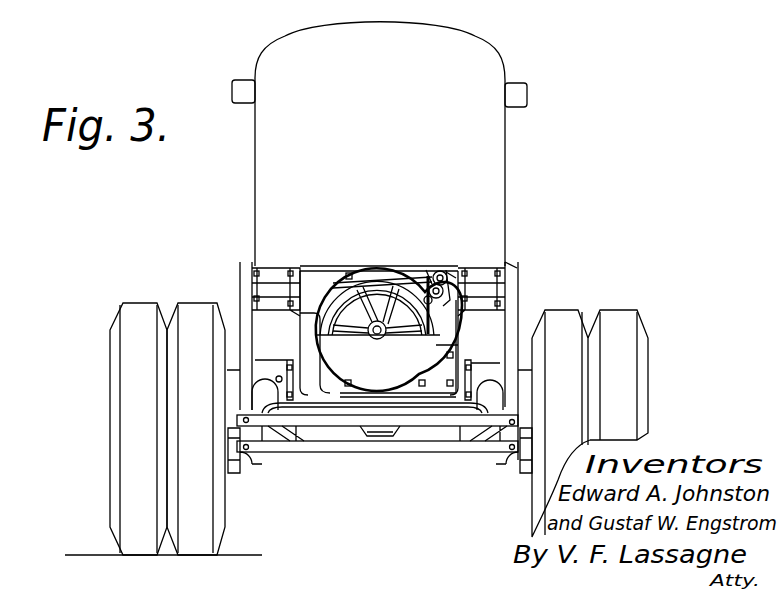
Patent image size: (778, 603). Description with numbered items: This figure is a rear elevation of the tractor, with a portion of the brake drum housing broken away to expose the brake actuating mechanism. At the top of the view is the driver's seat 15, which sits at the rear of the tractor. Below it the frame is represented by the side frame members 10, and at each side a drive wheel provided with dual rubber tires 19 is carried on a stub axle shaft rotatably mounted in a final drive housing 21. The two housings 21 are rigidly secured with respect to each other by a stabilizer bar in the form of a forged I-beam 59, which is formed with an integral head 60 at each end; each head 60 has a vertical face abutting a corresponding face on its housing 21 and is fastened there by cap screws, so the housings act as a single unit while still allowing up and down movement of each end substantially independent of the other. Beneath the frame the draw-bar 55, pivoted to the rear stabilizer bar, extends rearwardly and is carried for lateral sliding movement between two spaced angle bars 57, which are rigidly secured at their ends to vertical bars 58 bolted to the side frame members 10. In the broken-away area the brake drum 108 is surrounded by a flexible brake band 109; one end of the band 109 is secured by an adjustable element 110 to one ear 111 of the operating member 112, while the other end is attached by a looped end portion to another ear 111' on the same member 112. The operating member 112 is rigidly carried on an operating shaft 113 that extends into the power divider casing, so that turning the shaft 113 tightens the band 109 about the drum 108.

The driver's seat 15 is at (488, 60).
The side frame member 10 is at (247, 282).
The vertical bar 58 is at (247, 293).
The final drive housing 21 is at (270, 366).
The adjustable element 110 is at (384, 270).
The brake drum 108 is at (356, 271).
The flexible brake band 109 is at (368, 272).
The ear 111 is at (467, 255).
The ear 111' is at (433, 258).
The operating member 112 is at (448, 272).
The operating shaft 113 is at (506, 264).
The I-beam 59 is at (435, 410).
The angle bar 57 is at (319, 420).
The draw-bar 55 is at (373, 434).
The integral head 60 is at (228, 473).
The dual rubber tires 19 is at (132, 491).